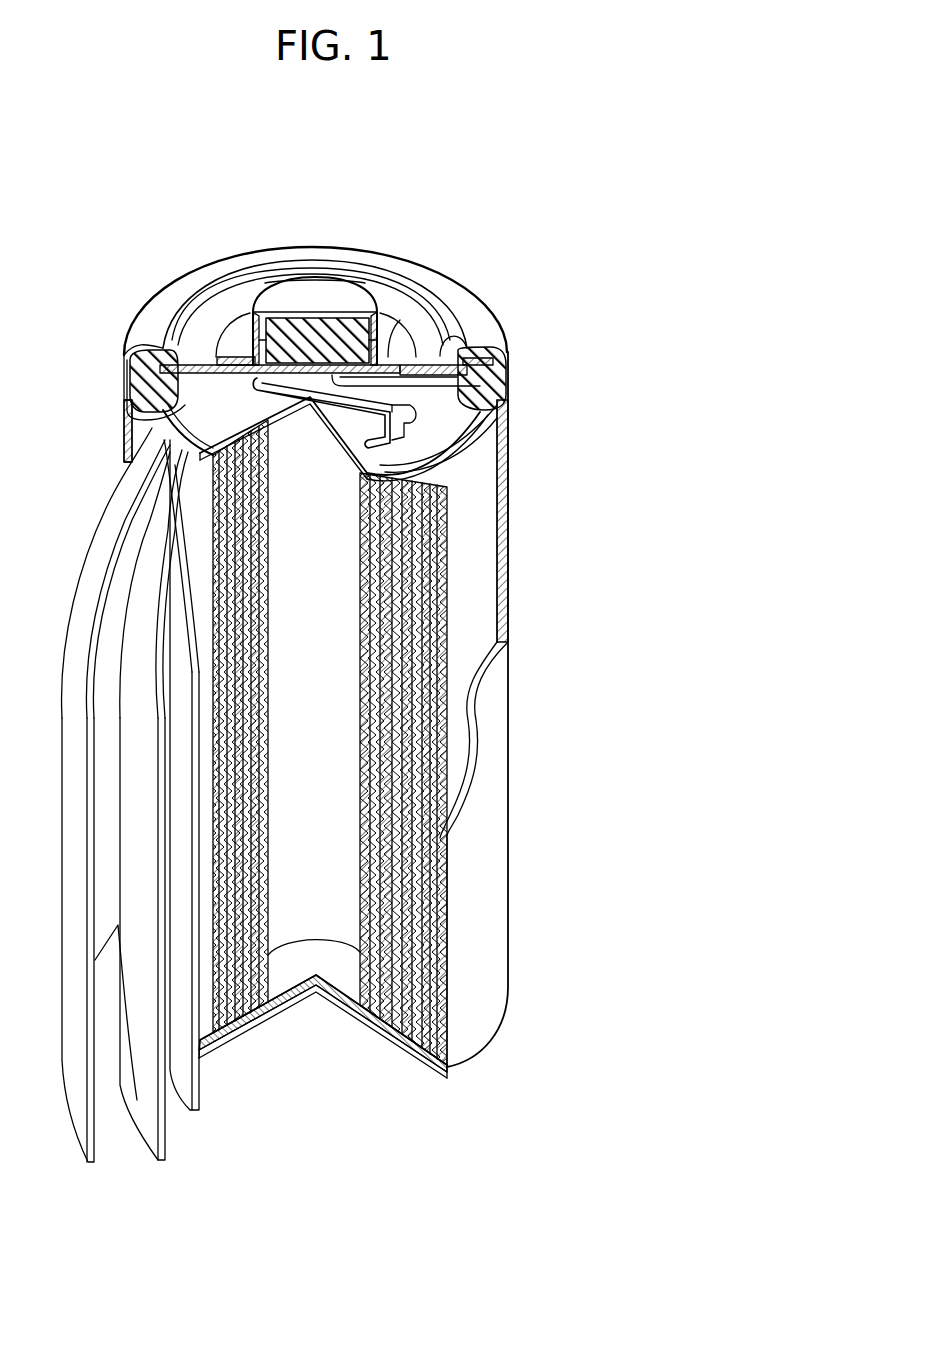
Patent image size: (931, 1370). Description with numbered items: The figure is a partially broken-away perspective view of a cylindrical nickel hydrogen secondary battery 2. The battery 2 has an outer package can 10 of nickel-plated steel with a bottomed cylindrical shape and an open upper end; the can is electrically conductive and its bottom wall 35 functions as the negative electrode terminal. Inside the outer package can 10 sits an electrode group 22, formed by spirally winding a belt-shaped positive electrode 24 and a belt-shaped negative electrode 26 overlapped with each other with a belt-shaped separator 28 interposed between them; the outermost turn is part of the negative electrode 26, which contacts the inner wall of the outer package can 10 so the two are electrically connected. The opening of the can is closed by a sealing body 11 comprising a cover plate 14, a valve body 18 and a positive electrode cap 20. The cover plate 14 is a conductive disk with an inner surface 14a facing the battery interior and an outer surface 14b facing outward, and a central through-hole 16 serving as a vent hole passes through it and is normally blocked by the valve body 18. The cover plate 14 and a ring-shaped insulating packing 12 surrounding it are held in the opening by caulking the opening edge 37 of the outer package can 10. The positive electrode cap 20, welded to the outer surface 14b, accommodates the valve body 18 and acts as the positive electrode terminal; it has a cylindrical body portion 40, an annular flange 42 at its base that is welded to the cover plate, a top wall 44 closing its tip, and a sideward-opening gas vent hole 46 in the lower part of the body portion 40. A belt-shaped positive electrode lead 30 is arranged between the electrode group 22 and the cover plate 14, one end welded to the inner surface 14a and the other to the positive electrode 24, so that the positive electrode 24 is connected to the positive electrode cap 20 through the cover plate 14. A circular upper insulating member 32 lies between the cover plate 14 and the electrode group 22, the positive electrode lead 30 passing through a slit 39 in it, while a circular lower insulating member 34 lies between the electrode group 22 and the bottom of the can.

The battery 2 is at (505, 245).
The outer package can 10 is at (492, 688).
The sealing body 11 is at (430, 335).
The insulating packing 12 is at (140, 380).
The cover plate 14 is at (182, 333).
The inner surface 14a is at (160, 414).
The outer surface 14b is at (145, 337).
The central through-hole 16 is at (497, 380).
The valve body 18 is at (292, 320).
The positive electrode cap 20 is at (350, 290).
The electrode group 22 is at (482, 590).
The positive electrode 24 is at (198, 1112).
The negative electrode 26 is at (95, 1152).
The separator 28 is at (165, 1152).
The positive electrode lead 30 is at (398, 415).
The upper insulating member 32 is at (432, 440).
The lower insulating member 34 is at (333, 972).
The bottom wall 35 is at (247, 1012).
The opening edge 37 is at (478, 318).
The slit 39 is at (410, 455).
The body portion 40 is at (383, 330).
The flange 42 is at (203, 340).
The top wall 44 is at (316, 297).
The gas vent hole 46 is at (256, 345).